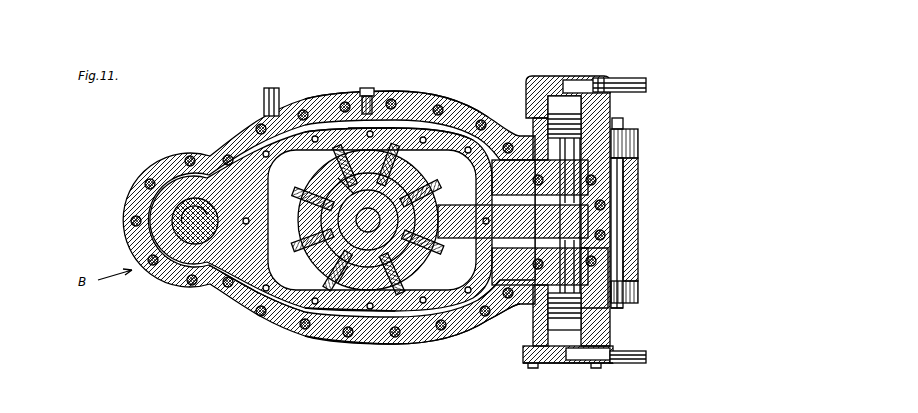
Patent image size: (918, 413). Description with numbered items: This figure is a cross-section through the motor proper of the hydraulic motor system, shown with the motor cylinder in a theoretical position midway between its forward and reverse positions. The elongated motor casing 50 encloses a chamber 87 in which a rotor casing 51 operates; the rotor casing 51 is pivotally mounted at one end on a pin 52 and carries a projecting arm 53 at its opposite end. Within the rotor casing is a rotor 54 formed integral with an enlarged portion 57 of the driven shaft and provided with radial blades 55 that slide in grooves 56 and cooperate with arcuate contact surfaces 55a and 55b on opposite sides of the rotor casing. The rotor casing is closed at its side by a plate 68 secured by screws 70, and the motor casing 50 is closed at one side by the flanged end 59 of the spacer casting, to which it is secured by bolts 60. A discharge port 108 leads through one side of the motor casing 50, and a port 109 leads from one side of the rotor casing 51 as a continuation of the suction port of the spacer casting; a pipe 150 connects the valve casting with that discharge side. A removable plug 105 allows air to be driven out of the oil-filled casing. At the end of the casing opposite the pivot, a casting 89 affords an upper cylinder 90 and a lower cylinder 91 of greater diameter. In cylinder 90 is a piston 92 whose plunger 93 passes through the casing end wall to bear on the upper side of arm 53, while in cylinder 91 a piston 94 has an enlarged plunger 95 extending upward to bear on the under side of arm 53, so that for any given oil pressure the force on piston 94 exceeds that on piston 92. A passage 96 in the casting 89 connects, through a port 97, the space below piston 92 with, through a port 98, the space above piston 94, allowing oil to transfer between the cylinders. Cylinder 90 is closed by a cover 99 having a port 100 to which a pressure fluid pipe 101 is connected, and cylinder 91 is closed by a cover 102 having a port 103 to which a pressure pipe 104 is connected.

The motor casing 50 is at (320, 87).
The rotor casing 51 is at (412, 125).
The pin 52 is at (165, 222).
The projecting arm 53 is at (580, 213).
The rotor 54 is at (425, 190).
The radial blades 55 is at (333, 166).
The arcuate contact surface 55a is at (385, 125).
The arcuate contact surface 55b is at (338, 304).
The grooves 56 is at (300, 205).
The enlarged portion of shaft 57 is at (320, 226).
The flanged end 59 is at (480, 304).
The bolts 60 is at (215, 146).
The plate 68 is at (245, 150).
The screws 70 is at (312, 170).
The chamber 87 is at (412, 316).
The casting 89 is at (630, 180).
The cylinder 90 is at (574, 104).
The cylinder 91 is at (574, 328).
The piston 92 is at (615, 115).
The plunger 93 is at (615, 160).
The piston 94 is at (574, 308).
The plunger 95 is at (600, 270).
The passage 96 is at (615, 240).
The port 97 is at (630, 140).
The port 98 is at (630, 290).
The cover 99 is at (562, 68).
The port 100 is at (578, 74).
The pressure fluid pipe 101 is at (620, 72).
The cover 102 is at (535, 356).
The port 103 is at (572, 352).
The pressure pipe 104 is at (625, 355).
The removable plug 105 is at (358, 80).
The discharge port 108 is at (276, 308).
The suction port 109 is at (456, 298).
The pipe 150 is at (255, 94).